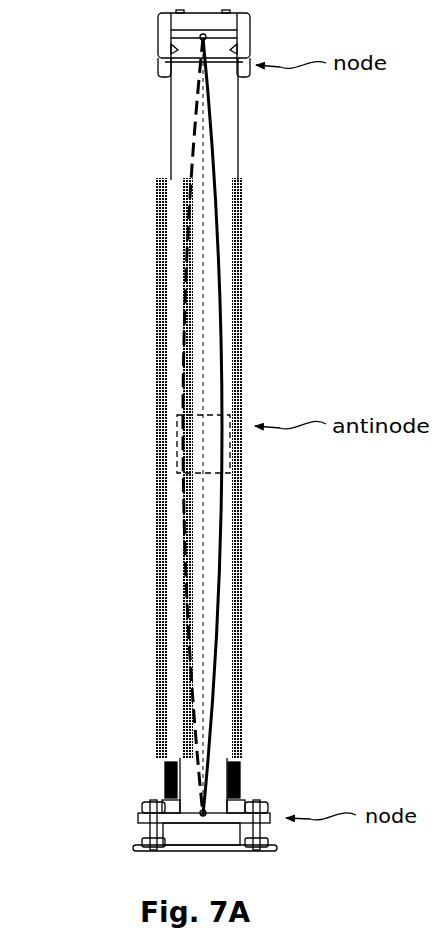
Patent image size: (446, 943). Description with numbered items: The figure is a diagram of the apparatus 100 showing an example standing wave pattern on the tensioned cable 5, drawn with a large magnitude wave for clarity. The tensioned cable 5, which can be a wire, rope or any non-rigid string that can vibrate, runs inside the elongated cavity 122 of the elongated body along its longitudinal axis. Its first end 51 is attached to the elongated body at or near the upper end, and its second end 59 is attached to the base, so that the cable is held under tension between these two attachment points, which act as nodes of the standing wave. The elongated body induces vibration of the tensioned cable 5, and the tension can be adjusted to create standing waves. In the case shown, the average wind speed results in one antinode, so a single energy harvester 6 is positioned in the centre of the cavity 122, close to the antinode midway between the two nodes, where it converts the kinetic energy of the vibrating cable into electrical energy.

The tensioned cable 5 is at (222, 297).
The energy harvester 6 is at (154, 447).
The first end 51 is at (148, 122).
The second end 59 is at (147, 761).
The apparatus 100 is at (282, 348).
The elongated cavity 122 is at (186, 220).